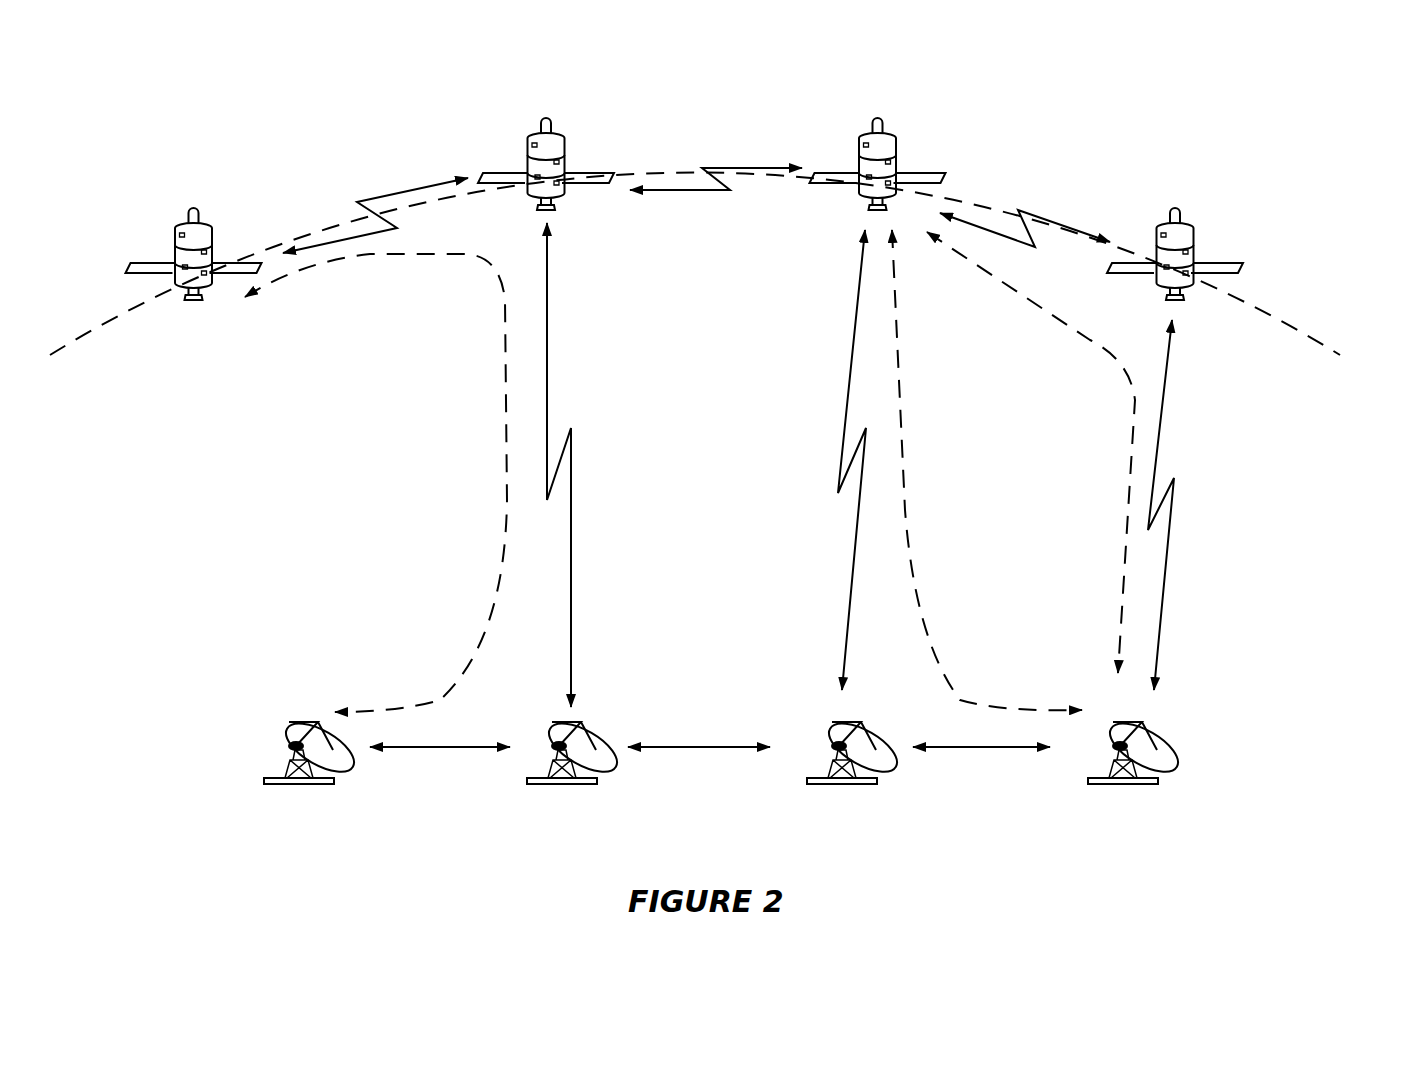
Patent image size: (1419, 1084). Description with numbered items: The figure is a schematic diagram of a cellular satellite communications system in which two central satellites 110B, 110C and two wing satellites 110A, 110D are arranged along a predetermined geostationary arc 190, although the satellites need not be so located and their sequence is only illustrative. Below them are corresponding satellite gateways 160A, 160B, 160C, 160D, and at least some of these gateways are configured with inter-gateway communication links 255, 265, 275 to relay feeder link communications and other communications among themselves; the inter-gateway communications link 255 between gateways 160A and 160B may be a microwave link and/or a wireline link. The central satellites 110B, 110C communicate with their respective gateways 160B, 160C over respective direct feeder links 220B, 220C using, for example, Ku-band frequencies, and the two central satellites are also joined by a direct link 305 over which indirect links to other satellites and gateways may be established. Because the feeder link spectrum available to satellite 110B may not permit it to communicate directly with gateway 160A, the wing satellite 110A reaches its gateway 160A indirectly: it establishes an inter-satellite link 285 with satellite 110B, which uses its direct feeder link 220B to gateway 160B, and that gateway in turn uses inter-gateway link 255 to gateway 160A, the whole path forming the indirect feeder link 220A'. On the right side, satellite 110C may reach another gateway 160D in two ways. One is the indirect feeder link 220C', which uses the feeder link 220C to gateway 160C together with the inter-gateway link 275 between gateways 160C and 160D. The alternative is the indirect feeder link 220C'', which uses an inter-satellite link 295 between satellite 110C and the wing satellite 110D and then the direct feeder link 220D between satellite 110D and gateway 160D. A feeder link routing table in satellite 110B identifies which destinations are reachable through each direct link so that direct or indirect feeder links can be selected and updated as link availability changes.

The wing satellite 110A is at (205, 222).
The central satellite 110B is at (556, 132).
The central satellite 110C is at (888, 132).
The wing satellite 110D is at (1188, 222).
The satellite gateway 160A is at (327, 812).
The satellite gateway 160B is at (591, 812).
The satellite gateway 160C is at (870, 812).
The satellite gateway 160D is at (1151, 812).
The geostationary arc 190 is at (1313, 352).
The indirect feeder link 220A' is at (376, 483).
The direct feeder link 220B is at (547, 268).
The direct feeder link 220C is at (809, 460).
The indirect feeder link 220C' is at (987, 470).
The indirect feeder link 220C'' is at (1031, 452).
The direct feeder link 220D is at (1170, 512).
The inter-gateway communications link 255 is at (420, 748).
The inter-gateway communication link 265 is at (695, 748).
The inter-gateway link 275 is at (960, 748).
The inter-satellite link 285 is at (376, 197).
The inter-satellite link 295 is at (1035, 213).
The direct link 305 is at (722, 168).